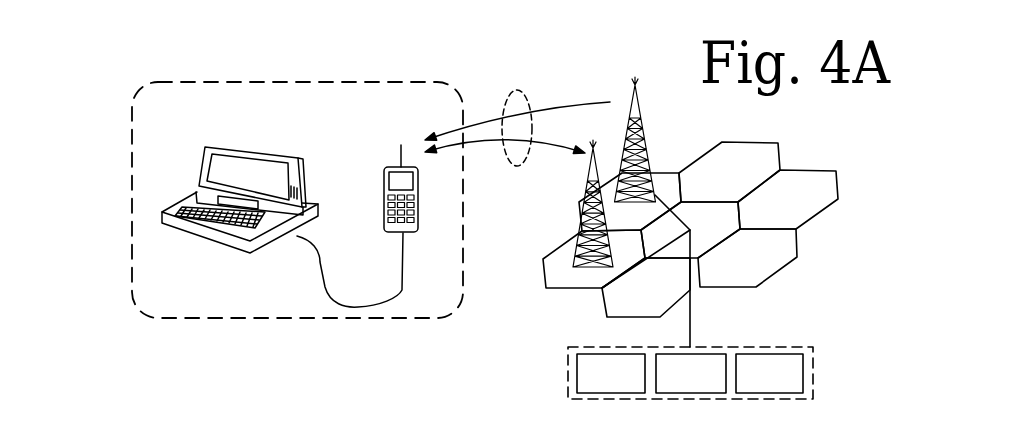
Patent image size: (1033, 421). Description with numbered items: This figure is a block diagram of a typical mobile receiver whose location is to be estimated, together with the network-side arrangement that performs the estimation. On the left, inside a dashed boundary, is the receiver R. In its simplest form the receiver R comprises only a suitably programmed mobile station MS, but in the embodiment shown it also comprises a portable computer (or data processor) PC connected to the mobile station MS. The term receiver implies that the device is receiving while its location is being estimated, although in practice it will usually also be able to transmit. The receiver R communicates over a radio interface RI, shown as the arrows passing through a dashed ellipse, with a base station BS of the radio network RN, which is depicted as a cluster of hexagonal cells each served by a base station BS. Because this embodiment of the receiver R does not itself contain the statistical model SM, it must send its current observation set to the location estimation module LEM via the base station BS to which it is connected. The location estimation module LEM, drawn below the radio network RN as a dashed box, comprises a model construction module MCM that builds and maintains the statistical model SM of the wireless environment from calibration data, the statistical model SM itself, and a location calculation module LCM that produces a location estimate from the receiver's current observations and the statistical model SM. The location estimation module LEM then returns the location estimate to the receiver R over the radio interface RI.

The receiver R is at (132, 207).
The portable computer PC is at (243, 148).
The mobile station MS is at (393, 166).
The radio interface RI is at (517, 92).
The base station BS is at (646, 134).
The radio network RN is at (770, 280).
The location estimation module LEM is at (647, 373).
The model construction module MCM is at (611, 373).
The statistical model SM is at (691, 373).
The location calculation module LCM is at (769, 373).